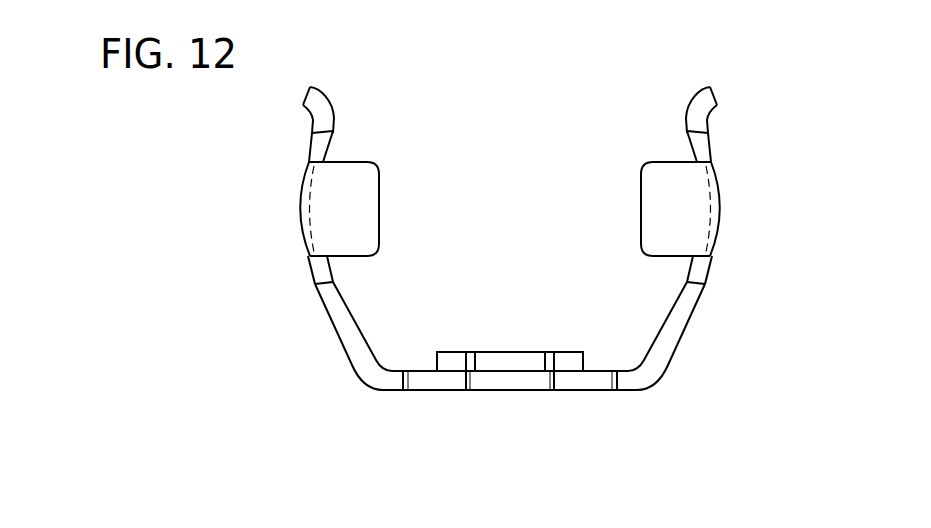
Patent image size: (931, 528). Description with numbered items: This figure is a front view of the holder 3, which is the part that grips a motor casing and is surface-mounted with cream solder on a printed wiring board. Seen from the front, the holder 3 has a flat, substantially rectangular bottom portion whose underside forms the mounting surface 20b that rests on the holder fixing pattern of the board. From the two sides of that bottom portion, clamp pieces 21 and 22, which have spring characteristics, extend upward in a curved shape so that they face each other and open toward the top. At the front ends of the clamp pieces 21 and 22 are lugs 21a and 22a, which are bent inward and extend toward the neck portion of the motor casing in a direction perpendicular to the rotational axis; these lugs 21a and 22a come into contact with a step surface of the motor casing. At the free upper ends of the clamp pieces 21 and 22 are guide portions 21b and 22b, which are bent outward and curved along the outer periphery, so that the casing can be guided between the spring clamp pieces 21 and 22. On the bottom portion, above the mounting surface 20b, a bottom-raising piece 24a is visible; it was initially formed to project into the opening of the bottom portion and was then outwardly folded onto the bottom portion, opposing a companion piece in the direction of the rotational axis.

The holder 3 is at (247, 197).
The clamp piece 21 is at (336, 329).
The lug 21a is at (377, 195).
The guide portion 21b is at (330, 102).
The clamp piece 22 is at (684, 329).
The lug 22a is at (643, 195).
The guide portion 22b is at (688, 102).
The mounting surface 20b is at (522, 392).
The bottom-raising piece 24a is at (505, 362).